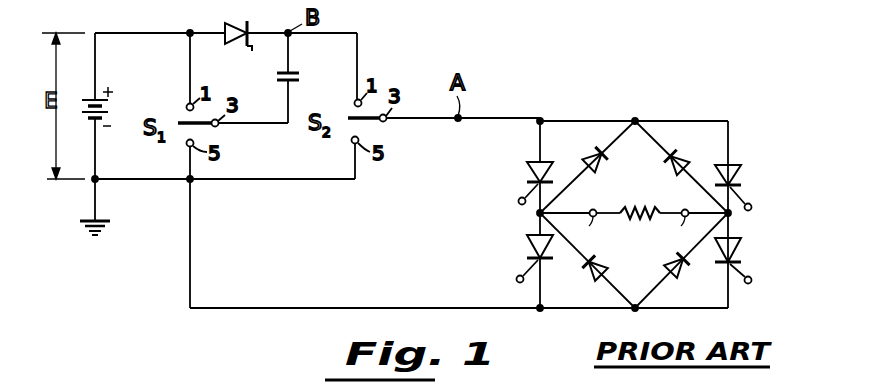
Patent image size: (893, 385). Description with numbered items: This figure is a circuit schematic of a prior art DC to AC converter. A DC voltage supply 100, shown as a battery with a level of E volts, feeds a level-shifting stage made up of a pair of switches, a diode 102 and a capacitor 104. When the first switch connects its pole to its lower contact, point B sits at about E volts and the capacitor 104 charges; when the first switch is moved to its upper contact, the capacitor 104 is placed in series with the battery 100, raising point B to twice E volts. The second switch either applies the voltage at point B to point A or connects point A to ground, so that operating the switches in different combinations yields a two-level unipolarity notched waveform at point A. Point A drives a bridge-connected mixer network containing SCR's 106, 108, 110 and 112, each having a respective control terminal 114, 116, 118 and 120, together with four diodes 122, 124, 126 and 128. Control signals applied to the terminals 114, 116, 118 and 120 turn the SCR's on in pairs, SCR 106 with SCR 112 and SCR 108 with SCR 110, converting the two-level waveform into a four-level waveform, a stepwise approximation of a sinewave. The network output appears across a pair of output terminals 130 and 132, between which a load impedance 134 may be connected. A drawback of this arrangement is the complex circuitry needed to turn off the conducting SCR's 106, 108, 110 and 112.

The DC voltage supply 100 is at (115, 106).
The diode 102 is at (240, 52).
The capacitor 104 is at (299, 80).
The SCR 106 is at (528, 182).
The SCR 108 is at (528, 258).
The SCR 110 is at (741, 185).
The SCR 112 is at (741, 262).
The control terminal 114 is at (518, 202).
The control terminal 116 is at (516, 279).
The control terminal 118 is at (752, 208).
The control terminal 120 is at (752, 281).
The diode 122 is at (597, 149).
The diode 124 is at (577, 276).
The diode 126 is at (673, 152).
The diode 128 is at (693, 275).
The output terminal 130 is at (571, 265).
The output terminal 132 is at (700, 264).
The load impedance 134 is at (641, 206).